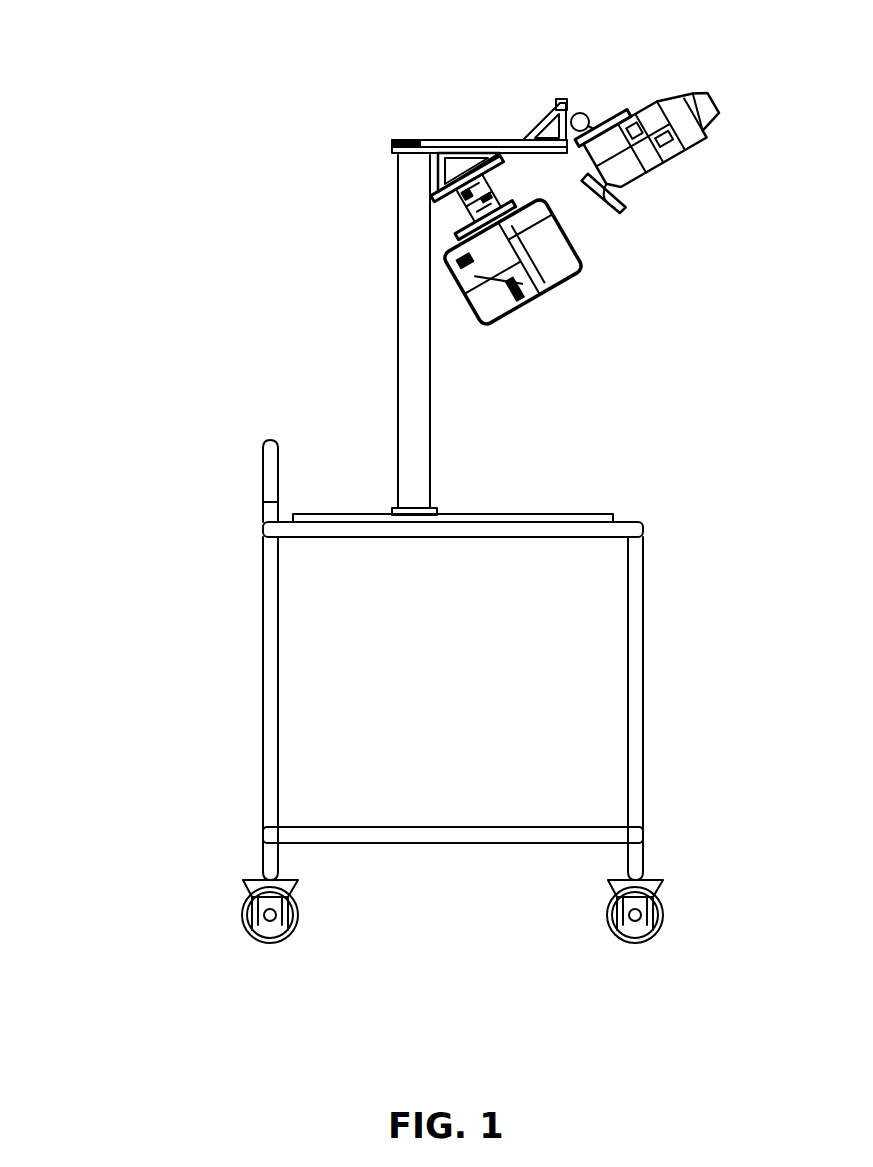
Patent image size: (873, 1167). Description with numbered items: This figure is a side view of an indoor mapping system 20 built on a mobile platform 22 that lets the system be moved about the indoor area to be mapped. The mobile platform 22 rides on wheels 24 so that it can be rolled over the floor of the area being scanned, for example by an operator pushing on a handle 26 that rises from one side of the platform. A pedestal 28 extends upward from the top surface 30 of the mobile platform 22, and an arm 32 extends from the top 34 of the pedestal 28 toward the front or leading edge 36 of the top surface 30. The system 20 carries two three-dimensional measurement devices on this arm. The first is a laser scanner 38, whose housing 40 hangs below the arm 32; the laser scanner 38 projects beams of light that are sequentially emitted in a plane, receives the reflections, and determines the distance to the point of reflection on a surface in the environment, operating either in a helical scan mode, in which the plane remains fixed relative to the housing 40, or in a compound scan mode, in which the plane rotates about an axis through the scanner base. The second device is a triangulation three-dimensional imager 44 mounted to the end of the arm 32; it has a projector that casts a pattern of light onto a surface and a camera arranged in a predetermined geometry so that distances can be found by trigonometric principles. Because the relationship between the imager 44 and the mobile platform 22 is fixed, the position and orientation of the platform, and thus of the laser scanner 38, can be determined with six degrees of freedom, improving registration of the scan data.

The indoor mapping system 20 is at (158, 146).
The mobile platform 22 is at (263, 697).
The wheels 24 is at (257, 940).
The handle 26 is at (265, 483).
The pedestal 28 is at (397, 458).
The top surface 30 is at (570, 513).
The arm 32 is at (453, 138).
The top of the pedestal 34 is at (397, 160).
The leading edge 36 is at (642, 517).
The laser scanner 38 is at (537, 269).
The housing 40 is at (587, 255).
The triangulation 3D imager 44 is at (707, 80).